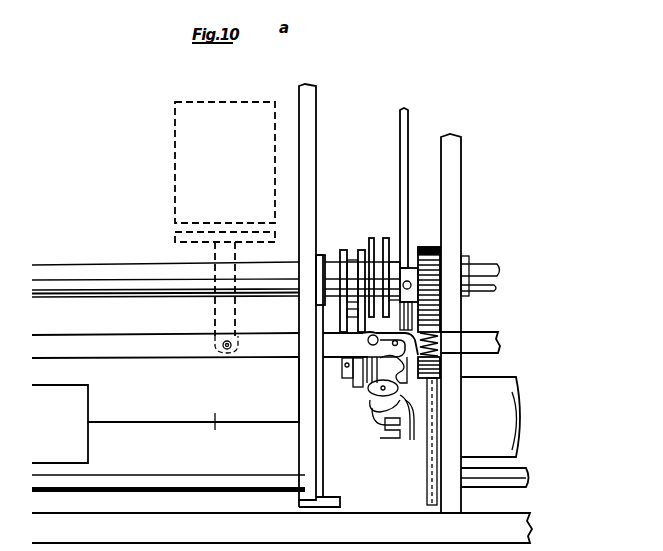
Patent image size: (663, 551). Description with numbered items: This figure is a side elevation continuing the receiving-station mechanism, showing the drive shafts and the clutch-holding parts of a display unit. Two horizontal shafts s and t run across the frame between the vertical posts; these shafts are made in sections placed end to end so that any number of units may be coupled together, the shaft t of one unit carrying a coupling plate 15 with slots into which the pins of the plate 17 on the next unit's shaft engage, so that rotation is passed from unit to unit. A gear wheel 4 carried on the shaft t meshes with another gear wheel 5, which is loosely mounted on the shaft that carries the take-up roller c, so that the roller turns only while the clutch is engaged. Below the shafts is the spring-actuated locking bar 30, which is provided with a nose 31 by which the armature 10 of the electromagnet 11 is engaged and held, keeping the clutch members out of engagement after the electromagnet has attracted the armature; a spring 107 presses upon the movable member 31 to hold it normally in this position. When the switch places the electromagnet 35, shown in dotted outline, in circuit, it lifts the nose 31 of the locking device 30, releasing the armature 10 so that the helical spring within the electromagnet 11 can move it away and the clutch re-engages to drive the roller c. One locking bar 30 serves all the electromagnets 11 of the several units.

The electromagnet 35 is at (185, 172).
The shaft s is at (93, 278).
The shaft t is at (97, 290).
The spring-actuated locking bar 30 is at (145, 350).
The electromagnet 11 is at (88, 451).
The take-up roller c is at (216, 432).
The coupling plate 15 is at (341, 249).
The plate 17 is at (360, 249).
The gear wheel 4 is at (441, 252).
The gear wheel 5 is at (480, 266).
The spring 107 is at (445, 350).
The nose 31 is at (441, 370).
The armature 10 is at (425, 440).